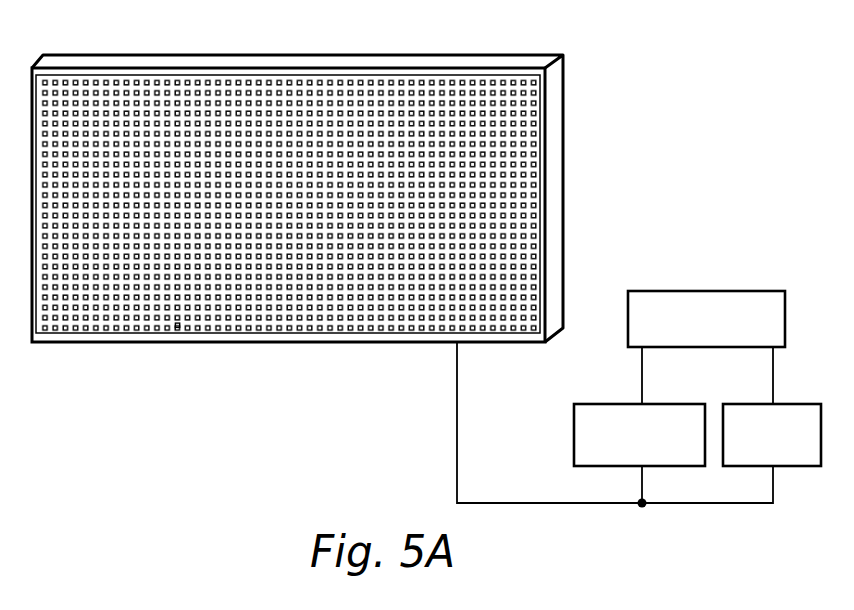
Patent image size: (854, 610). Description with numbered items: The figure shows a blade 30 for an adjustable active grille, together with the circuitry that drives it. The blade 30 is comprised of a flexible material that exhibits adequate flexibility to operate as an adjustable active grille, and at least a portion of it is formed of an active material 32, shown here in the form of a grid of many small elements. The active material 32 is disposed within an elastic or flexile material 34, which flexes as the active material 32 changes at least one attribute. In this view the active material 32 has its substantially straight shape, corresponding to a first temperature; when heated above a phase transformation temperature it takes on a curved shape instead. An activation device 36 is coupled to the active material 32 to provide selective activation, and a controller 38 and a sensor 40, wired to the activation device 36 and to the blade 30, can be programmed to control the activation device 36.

The blade 30 is at (630, 88).
The active material 32 is at (285, 288).
The elastic or flexile material 34 is at (177, 327).
The activation device 36 is at (612, 403).
The controller 38 is at (703, 291).
The sensor 40 is at (751, 403).